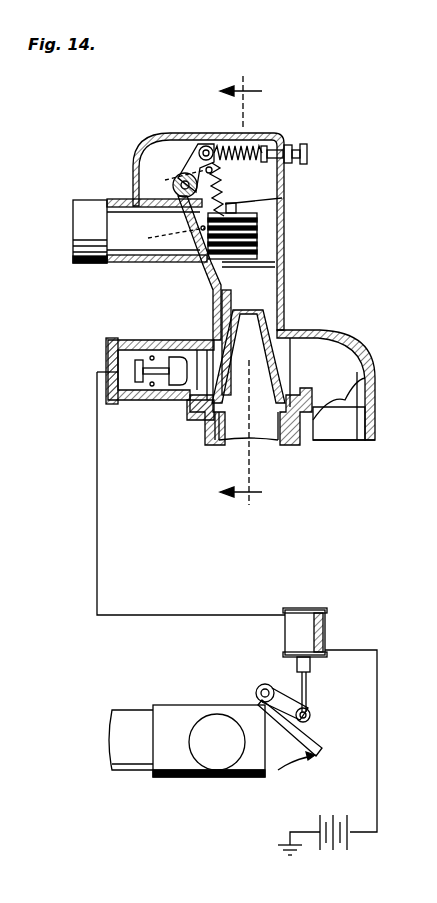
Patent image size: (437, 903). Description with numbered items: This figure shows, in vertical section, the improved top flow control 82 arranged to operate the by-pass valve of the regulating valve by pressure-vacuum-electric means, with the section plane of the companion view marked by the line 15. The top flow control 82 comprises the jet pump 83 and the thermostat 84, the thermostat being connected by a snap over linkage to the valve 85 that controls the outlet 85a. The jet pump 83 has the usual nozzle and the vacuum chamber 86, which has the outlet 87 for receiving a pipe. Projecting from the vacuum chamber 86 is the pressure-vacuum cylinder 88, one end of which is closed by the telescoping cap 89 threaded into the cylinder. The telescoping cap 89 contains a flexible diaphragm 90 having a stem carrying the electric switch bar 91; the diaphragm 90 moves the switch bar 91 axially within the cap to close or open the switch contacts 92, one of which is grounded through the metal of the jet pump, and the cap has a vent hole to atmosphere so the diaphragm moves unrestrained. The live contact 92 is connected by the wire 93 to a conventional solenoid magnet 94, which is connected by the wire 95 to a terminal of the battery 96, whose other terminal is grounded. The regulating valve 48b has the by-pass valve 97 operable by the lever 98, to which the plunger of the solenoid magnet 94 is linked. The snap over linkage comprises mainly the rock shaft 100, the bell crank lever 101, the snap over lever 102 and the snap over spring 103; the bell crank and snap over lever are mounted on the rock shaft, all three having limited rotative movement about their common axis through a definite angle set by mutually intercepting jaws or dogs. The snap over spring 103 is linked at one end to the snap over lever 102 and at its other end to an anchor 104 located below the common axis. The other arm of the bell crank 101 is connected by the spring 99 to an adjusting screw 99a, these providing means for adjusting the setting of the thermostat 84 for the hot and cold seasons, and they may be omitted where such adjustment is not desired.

The section line 15 is at (252, 290).
The top flow control 82 is at (148, 148).
The jet pump 83 is at (278, 314).
The thermostat 84 is at (262, 234).
The valve 85 is at (192, 266).
The outlet 85a is at (73, 212).
The vacuum chamber 86 is at (300, 330).
The outlet 87 is at (340, 440).
The pressure-vacuum cylinder 88 is at (150, 342).
The telescoping cap 89 is at (106, 343).
The flexible diaphragm 90 is at (170, 405).
The electric switch bar 91 is at (108, 362).
The switch contacts 92 is at (146, 403).
The wire 93 is at (97, 497).
The solenoid magnet 94 is at (328, 632).
The wire 95 is at (378, 750).
The battery 96 is at (333, 850).
The by-pass valve 97 is at (312, 744).
The lever 98 is at (270, 684).
The spring 99 is at (232, 146).
The adjusting screw 99a is at (289, 148).
The rock shaft 100 is at (175, 182).
The bell crank lever 101 is at (190, 142).
The snap over lever 102 is at (278, 176).
The snap over spring 103 is at (224, 182).
The anchor 104 is at (159, 236).
The regulating valve 48b is at (180, 757).